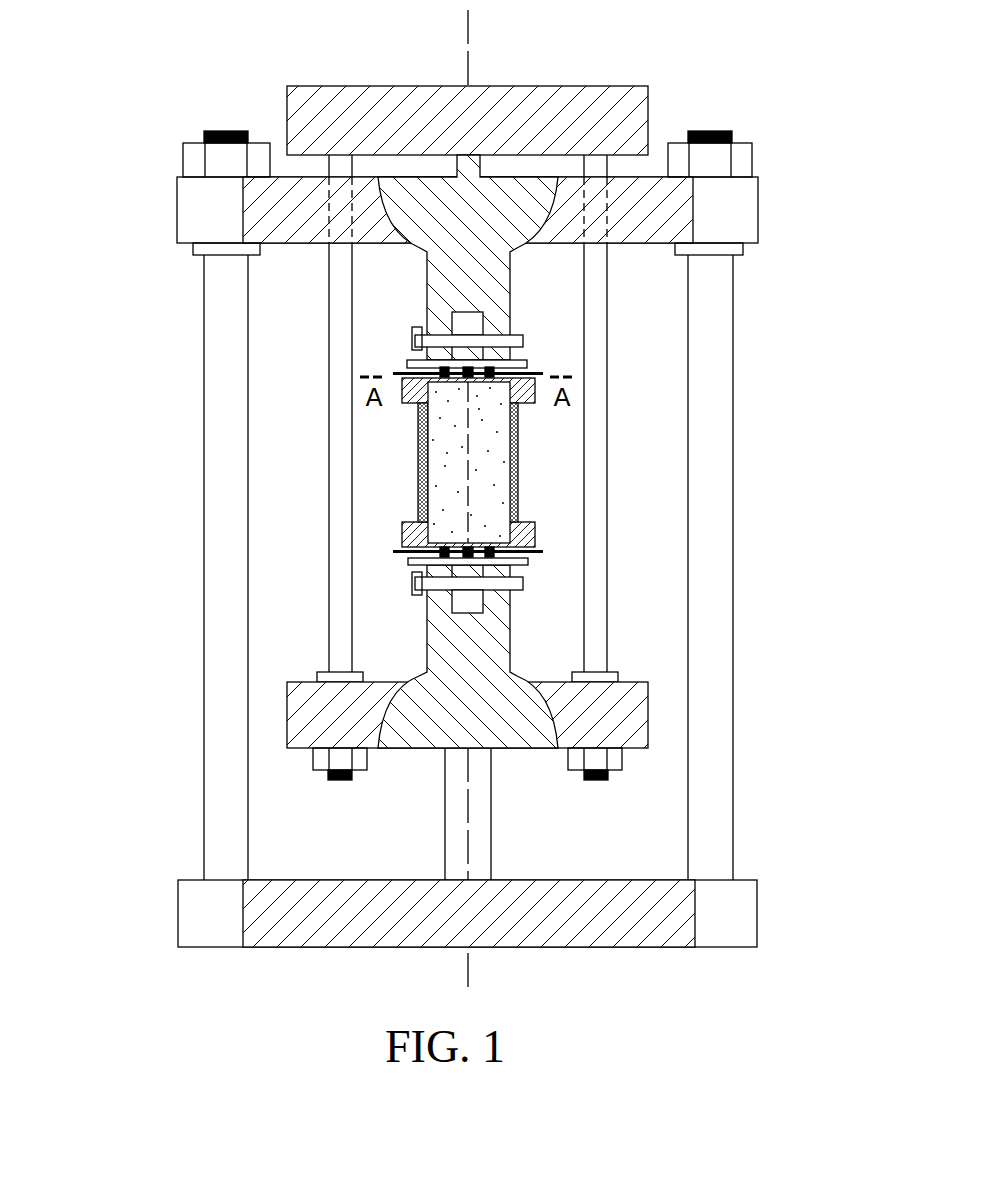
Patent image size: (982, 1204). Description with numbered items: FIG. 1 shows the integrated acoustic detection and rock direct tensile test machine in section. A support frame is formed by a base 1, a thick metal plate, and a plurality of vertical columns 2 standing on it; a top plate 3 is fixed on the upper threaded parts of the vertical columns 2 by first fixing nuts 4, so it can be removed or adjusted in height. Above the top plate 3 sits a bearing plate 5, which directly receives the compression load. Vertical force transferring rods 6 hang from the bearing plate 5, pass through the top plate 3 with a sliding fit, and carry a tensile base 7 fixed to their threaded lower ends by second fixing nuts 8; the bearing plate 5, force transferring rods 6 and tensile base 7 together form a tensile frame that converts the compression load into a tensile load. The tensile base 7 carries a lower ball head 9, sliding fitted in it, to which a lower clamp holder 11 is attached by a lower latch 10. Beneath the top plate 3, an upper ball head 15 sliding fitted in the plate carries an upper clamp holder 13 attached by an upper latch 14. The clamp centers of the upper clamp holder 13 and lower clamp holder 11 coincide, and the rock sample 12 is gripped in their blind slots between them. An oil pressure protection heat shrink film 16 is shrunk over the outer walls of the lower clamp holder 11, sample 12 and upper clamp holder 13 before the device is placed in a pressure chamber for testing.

The base 1 is at (223, 928).
The vertical column 2 is at (228, 512).
The top plate 3 is at (200, 215).
The first fixing nut 4 is at (193, 163).
The bearing plate 5 is at (535, 117).
The force transferring rod 6 is at (598, 328).
The tensile base 7 is at (633, 692).
The second fixing nut 8 is at (575, 762).
The lower ball head 9 is at (438, 650).
The lower latch 10 is at (415, 582).
The lower clamp holder 11 is at (417, 550).
The sample 12 is at (440, 455).
The upper clamp holder 13 is at (410, 365).
The upper latch 14 is at (413, 338).
The upper ball head 15 is at (440, 262).
The oil pressure protection heat shrink film 16 is at (517, 457).